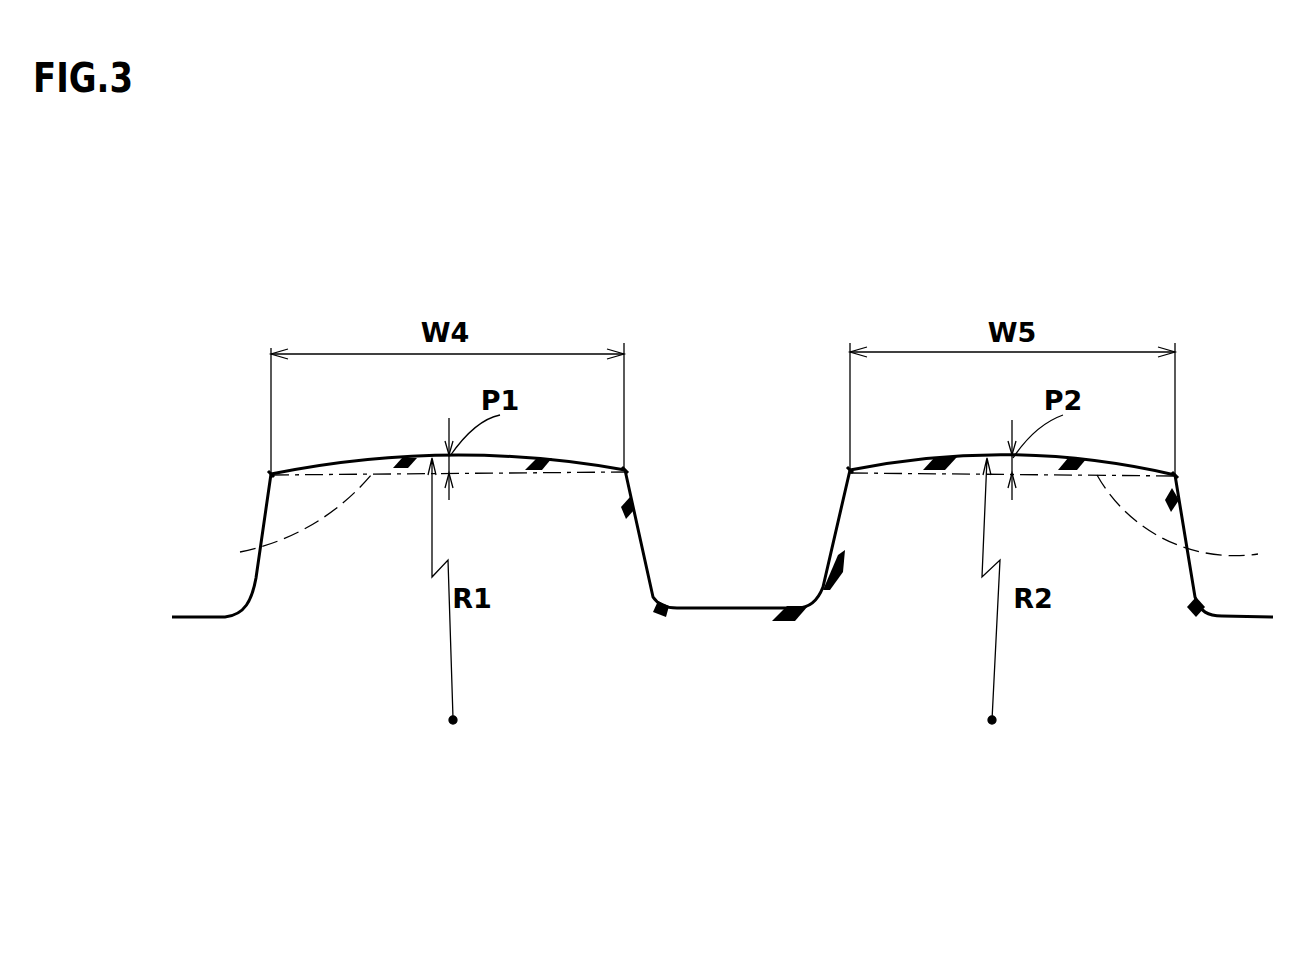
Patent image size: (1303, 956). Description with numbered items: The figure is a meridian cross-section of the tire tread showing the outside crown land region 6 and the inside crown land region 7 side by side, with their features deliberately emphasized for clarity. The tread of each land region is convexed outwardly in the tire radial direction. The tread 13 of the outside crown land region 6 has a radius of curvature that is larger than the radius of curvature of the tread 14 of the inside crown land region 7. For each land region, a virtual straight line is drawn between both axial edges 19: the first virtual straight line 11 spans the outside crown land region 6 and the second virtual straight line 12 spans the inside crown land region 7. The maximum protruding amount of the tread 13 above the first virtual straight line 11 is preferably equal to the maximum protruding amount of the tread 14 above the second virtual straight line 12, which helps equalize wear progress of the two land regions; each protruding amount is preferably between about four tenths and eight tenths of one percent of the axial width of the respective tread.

The outside crown land region 6 is at (255, 460).
The inside crown land region 7 is at (1197, 470).
The first virtual straight line 11 is at (240, 552).
The second virtual straight line 12 is at (1240, 554).
The tread of the outside crown land region 13 is at (364, 462).
The tread of the inside crown land region 14 is at (968, 455).
The axial edges 19 is at (270, 474).